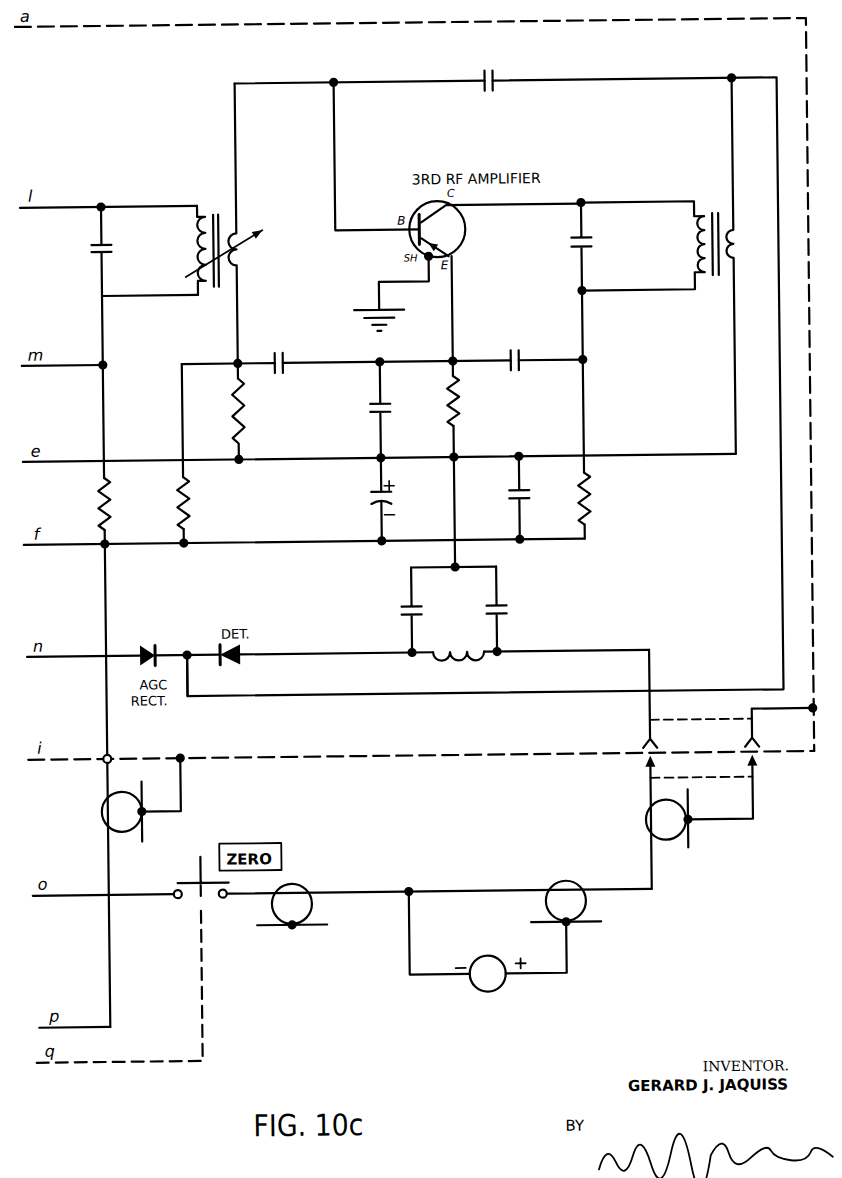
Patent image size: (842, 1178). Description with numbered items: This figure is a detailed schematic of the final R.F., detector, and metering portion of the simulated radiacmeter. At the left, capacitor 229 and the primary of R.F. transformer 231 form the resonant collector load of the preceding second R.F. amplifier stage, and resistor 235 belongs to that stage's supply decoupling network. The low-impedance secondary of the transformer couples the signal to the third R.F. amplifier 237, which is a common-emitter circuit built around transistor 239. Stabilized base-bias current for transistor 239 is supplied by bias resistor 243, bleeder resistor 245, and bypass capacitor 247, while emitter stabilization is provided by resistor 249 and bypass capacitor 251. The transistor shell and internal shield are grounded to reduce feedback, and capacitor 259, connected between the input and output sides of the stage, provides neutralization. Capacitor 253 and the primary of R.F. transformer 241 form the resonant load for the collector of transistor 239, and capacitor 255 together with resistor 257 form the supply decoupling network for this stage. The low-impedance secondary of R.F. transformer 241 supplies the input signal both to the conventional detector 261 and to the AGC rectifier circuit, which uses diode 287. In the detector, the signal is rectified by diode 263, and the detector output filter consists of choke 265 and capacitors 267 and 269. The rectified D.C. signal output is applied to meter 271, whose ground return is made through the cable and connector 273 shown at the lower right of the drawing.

The capacitor 229 is at (107, 256).
The R.F. transformer 231 is at (212, 212).
The resistor 235 is at (96, 498).
The third R.F. amplifier 237 is at (410, 210).
The transistor 239 is at (466, 246).
The R.F. transformer 241 is at (711, 210).
The bias resistor 243 is at (190, 501).
The bleeder resistor 245 is at (243, 411).
The bypass capacitor 247 is at (276, 356).
The resistor 249 is at (458, 413).
The bypass capacitor 251 is at (388, 410).
The capacitor 253 is at (591, 249).
The capacitor 255 is at (530, 338).
The resistor 257 is at (591, 506).
The capacitor 259 is at (486, 78).
The detector 261 is at (182, 646).
The diode 263 is at (237, 663).
The choke 265 is at (462, 664).
The capacitor 267 is at (405, 609).
The capacitor 269 is at (496, 609).
The meter 271 is at (494, 996).
The cable and connector 273 is at (642, 733).
The diode 287 is at (138, 649).